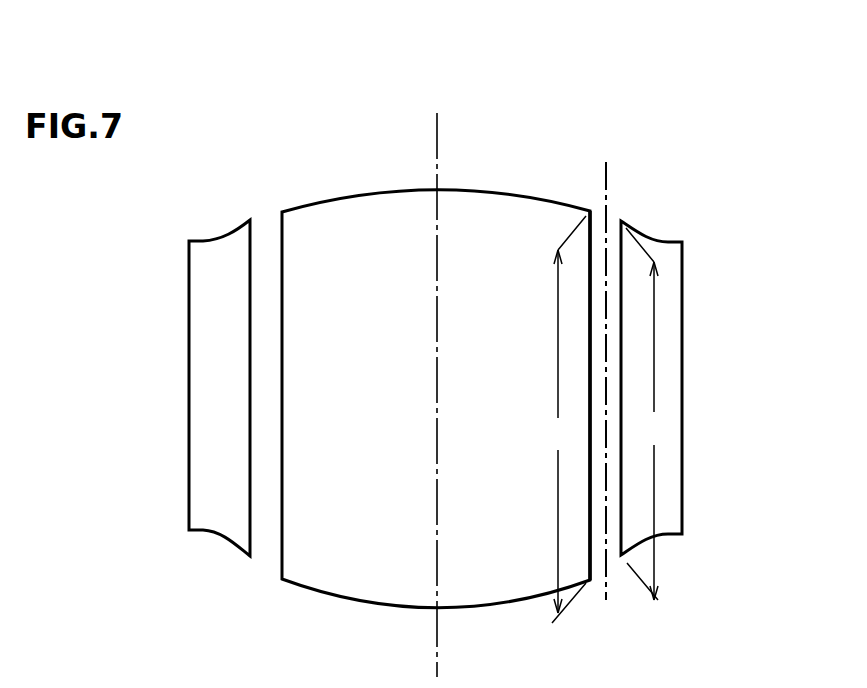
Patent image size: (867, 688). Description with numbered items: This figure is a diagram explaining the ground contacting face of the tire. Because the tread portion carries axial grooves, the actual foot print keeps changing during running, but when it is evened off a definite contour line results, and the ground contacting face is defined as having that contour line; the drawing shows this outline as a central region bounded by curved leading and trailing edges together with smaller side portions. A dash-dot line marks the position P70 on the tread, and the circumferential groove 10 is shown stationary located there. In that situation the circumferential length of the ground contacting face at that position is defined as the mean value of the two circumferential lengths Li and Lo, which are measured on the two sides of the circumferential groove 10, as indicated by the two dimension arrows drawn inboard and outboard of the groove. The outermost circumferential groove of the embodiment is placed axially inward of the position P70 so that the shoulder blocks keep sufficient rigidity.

The circumferential groove 10 is at (613, 222).
The position P70 is at (606, 165).
The circumferential length Li is at (566, 419).
The circumferential length Lo is at (646, 414).